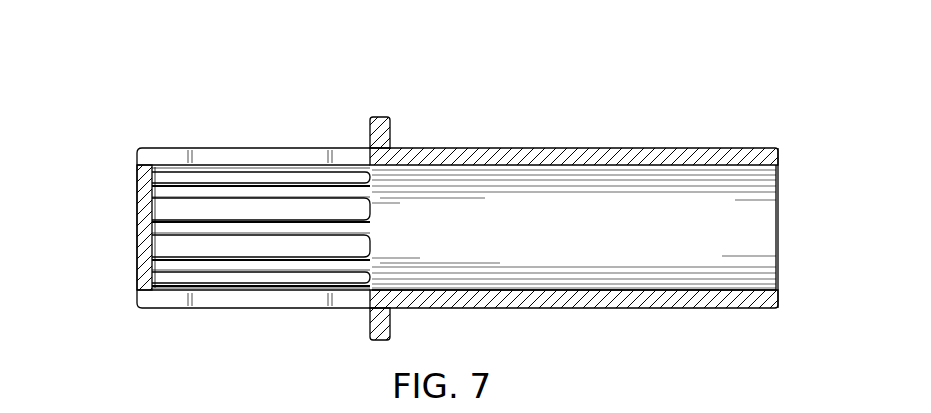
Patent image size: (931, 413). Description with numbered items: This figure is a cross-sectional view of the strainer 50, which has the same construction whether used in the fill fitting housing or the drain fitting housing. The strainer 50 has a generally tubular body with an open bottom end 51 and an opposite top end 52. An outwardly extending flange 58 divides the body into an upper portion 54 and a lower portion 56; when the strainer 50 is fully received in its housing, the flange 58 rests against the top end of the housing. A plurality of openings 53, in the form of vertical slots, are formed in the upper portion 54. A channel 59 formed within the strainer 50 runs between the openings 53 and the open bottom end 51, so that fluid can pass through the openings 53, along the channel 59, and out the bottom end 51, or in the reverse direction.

The strainer 50 is at (226, 114).
The open bottom end 51 is at (779, 157).
The top end 52 is at (138, 221).
The openings 53 is at (166, 214).
The upper portion 54 is at (286, 144).
The lower portion 56 is at (678, 144).
The outwardly extending flange 58 is at (378, 117).
The channel 59 is at (729, 292).